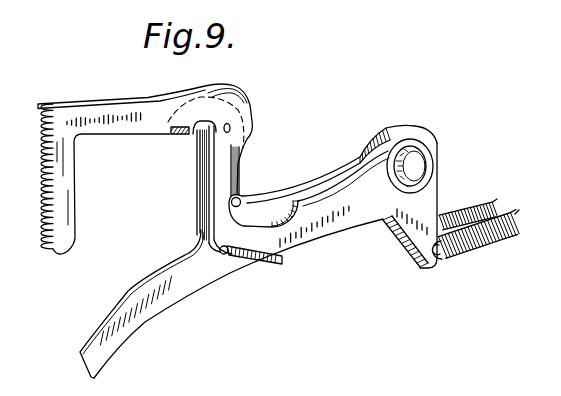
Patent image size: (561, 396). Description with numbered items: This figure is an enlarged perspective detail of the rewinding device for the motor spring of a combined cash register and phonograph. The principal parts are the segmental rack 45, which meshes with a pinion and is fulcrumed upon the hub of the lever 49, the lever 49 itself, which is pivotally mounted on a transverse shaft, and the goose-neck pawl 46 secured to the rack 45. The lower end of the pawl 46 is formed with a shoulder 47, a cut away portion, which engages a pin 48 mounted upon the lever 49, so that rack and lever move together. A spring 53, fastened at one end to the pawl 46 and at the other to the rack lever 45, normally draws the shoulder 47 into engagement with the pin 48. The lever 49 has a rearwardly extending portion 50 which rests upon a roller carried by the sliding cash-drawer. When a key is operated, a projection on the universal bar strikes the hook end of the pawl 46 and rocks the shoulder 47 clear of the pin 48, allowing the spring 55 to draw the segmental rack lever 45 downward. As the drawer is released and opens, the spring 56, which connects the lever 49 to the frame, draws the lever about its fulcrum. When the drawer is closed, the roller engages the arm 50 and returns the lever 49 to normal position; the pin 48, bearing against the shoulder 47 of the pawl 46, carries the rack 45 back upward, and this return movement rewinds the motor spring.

The segmental rack 45 is at (68, 164).
The goose-neck pawl 46 is at (178, 136).
The shoulder 47 is at (231, 200).
The pin 48 is at (243, 196).
The lever 49 is at (323, 174).
The rearwardly extending portion 50 is at (108, 325).
The spring 53 is at (245, 262).
The spring 55 is at (468, 247).
The spring 56 is at (466, 207).